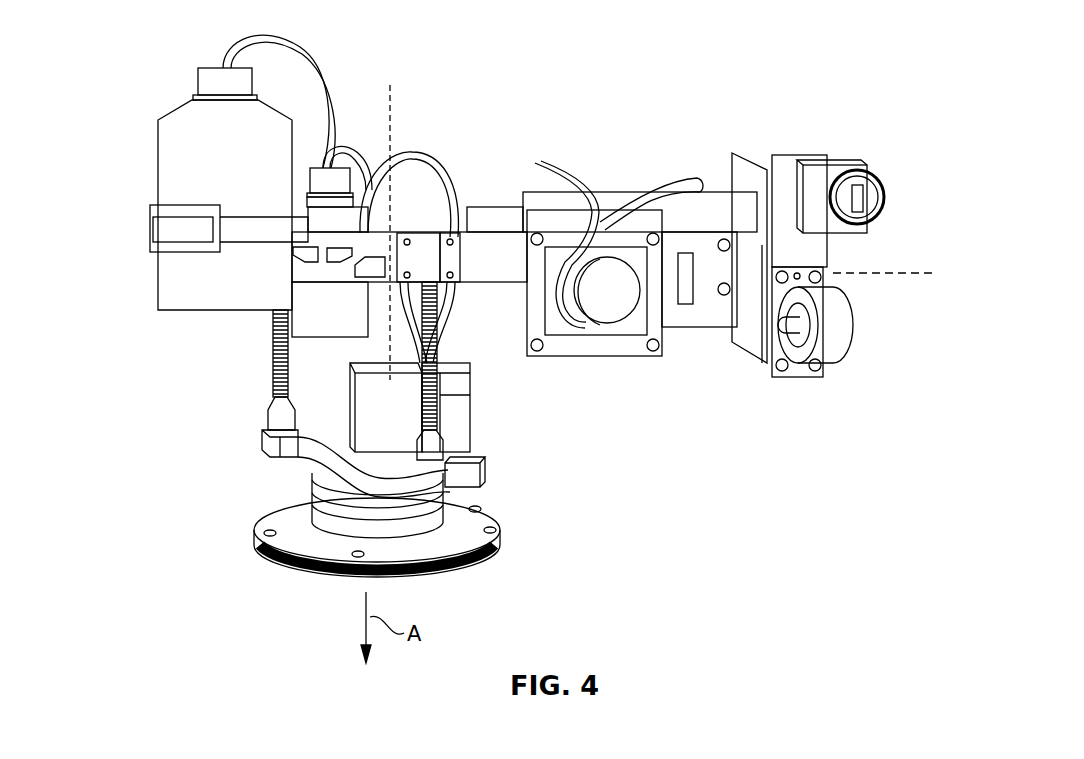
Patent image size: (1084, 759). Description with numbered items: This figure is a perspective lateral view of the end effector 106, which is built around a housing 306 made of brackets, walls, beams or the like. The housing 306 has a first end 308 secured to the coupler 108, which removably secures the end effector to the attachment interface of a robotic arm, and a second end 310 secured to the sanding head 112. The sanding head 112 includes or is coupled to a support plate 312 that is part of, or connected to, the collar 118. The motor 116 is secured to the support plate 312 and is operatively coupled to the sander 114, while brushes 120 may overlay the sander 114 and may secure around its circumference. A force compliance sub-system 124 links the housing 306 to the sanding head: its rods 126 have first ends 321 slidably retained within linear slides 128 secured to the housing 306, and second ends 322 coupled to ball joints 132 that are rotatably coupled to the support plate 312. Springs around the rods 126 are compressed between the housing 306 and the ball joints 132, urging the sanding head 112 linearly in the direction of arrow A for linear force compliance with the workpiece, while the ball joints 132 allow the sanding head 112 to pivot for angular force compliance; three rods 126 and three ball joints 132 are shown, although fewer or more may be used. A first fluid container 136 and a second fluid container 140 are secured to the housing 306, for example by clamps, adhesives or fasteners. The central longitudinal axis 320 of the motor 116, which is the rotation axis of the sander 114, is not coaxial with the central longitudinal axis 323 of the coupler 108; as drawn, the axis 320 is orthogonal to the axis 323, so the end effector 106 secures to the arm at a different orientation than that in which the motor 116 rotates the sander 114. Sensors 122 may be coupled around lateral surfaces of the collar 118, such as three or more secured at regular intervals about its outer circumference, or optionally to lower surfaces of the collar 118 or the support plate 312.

The end effector 106 is at (765, 104).
The coupler 108 is at (835, 258).
The sanding head 112 is at (282, 507).
The sander 114 is at (300, 576).
The motor 116 is at (377, 393).
The collar 118 is at (313, 492).
The brushes 120 is at (268, 562).
The sensors 122 is at (256, 533).
The force compliance sub-system 124 is at (443, 413).
The rods 126 is at (277, 346).
The linear slides 128 is at (455, 240).
The ball joints 132 is at (277, 420).
The first fluid container 136 is at (317, 204).
The second fluid container 140 is at (163, 168).
The housing 306 is at (660, 176).
The first end 308 is at (717, 322).
The second end 310 is at (410, 240).
The support plate 312 is at (333, 445).
The central longitudinal axis 320 is at (388, 125).
The first ends 321 is at (437, 282).
The second ends 322 is at (440, 440).
The central longitudinal axis 323 is at (892, 280).